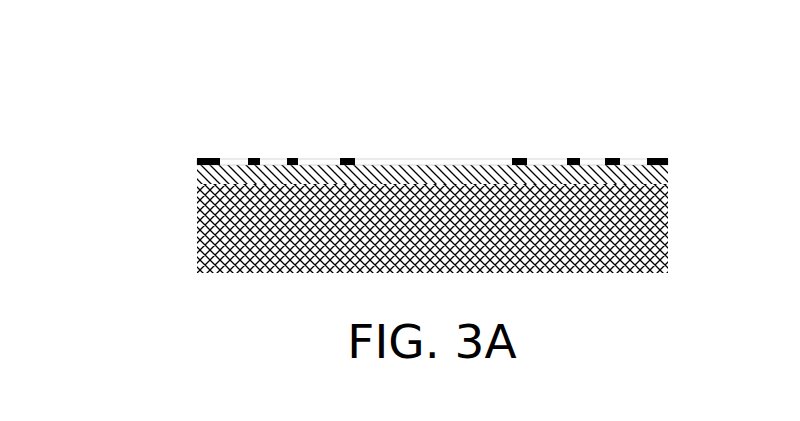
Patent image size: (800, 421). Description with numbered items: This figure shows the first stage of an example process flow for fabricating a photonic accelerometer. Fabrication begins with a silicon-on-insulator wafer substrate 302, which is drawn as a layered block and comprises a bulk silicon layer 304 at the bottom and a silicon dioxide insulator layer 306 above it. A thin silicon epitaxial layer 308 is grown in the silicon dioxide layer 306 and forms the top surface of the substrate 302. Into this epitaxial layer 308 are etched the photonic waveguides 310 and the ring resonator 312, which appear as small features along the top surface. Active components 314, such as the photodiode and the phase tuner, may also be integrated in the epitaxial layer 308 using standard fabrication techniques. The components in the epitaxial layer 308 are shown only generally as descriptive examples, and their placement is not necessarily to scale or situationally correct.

The silicon-on-insulator (SOI) wafer substrate 302 is at (683, 170).
The bulk silicon layer 304 is at (187, 238).
The silicon dioxide insulator layer 306 is at (187, 175).
The silicon epitaxial layer 308 is at (678, 162).
The photonic waveguides 310 is at (658, 158).
The ring resonator 312 is at (517, 158).
The active components 314 is at (588, 158).